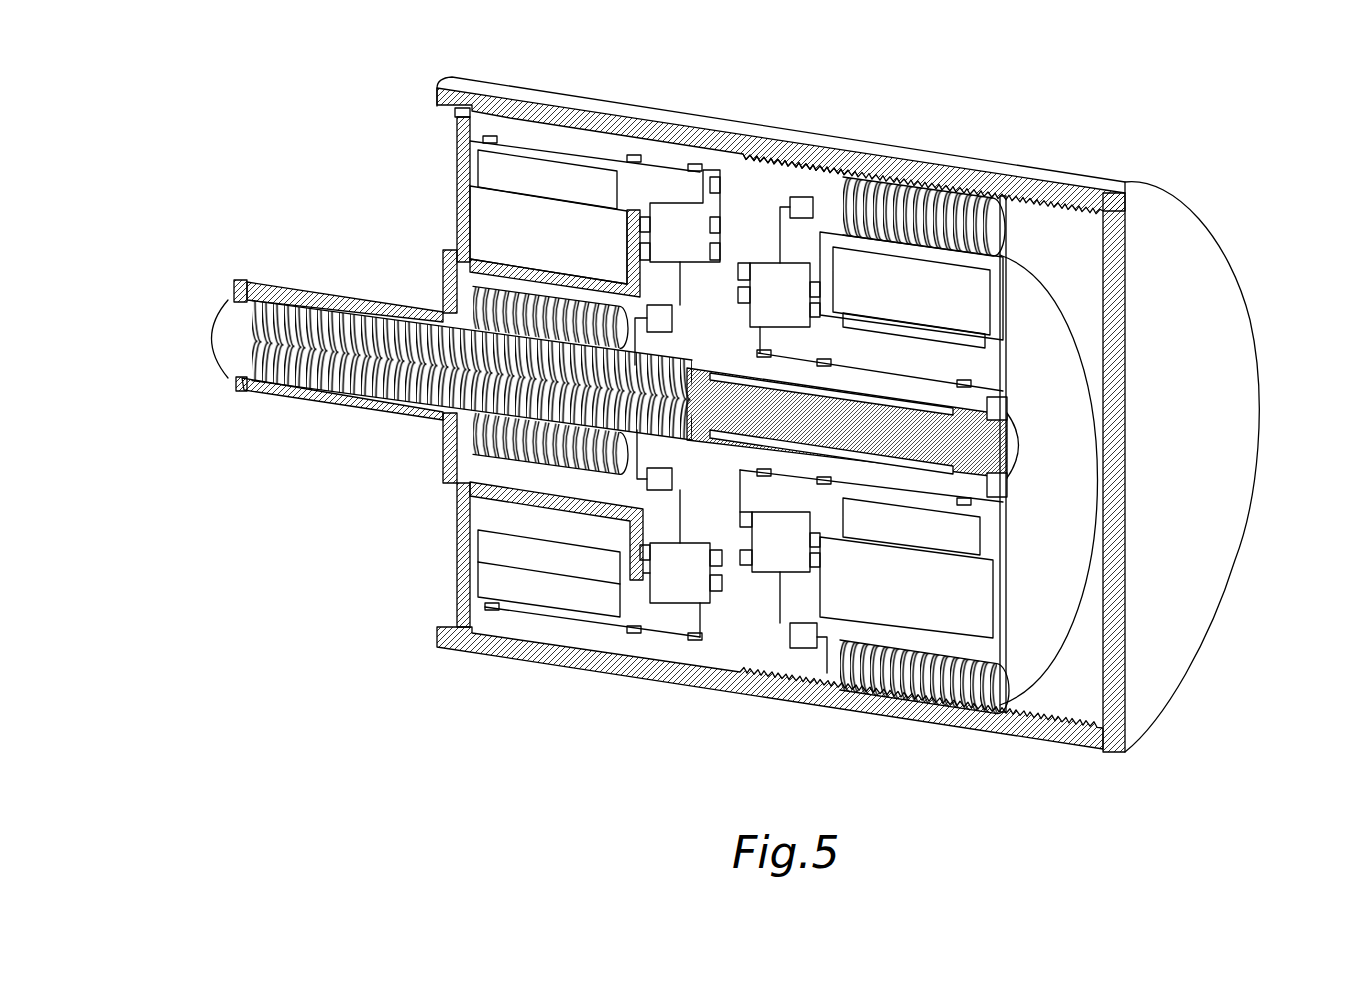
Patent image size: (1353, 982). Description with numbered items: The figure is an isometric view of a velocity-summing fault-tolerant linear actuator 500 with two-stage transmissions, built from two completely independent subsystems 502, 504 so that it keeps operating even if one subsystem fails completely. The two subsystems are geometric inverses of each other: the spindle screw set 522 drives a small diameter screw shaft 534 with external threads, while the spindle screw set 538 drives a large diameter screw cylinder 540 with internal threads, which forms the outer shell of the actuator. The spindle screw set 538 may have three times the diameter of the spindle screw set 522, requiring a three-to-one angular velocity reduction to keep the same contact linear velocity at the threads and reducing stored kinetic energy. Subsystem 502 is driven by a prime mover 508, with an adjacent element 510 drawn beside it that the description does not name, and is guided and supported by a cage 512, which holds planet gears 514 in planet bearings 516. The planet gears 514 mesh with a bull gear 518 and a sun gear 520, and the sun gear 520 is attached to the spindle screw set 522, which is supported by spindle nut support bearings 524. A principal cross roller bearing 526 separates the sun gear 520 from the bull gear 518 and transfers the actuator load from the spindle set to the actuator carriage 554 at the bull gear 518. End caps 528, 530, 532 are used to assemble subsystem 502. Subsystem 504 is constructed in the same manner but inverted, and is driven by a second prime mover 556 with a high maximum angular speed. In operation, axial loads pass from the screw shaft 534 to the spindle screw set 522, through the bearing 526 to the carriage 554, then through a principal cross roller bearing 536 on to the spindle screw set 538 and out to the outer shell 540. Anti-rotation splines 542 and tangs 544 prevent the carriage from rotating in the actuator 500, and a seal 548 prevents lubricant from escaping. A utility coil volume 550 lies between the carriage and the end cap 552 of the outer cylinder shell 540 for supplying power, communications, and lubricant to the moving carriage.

The actuator 500 is at (300, 150).
The actuator subsystem 502 is at (723, 728).
The actuator subsystem 504 is at (993, 775).
The prime mover 508 is at (535, 176).
The upper actuator body 510 is at (568, 212).
The cage 512 is at (540, 478).
The planet gears 514 is at (720, 495).
The planet bearings 516 is at (732, 598).
The bull gear 518 is at (663, 573).
The sun gear 520 is at (650, 522).
The spindle screw set 522 is at (490, 458).
The spindle nut support bearings 524 is at (440, 418).
The principal cross roller bearing 526 is at (657, 305).
The end cap 528 is at (455, 180).
The end cap 530 is at (240, 288).
The end cap 532 is at (698, 203).
The screw shaft 534 is at (218, 330).
The principal cross roller bearing 536 is at (803, 197).
The spindle screw set 538 is at (942, 187).
The screw cylinder 540 is at (874, 142).
The anti-rotation splines 542 is at (920, 443).
The tangs 544 is at (1010, 447).
The seal 548 is at (455, 122).
The utility coil volume 550 is at (1084, 697).
The end cap 552 is at (1197, 235).
The actuator carriage 554 is at (752, 182).
The second prime mover 556 is at (908, 273).